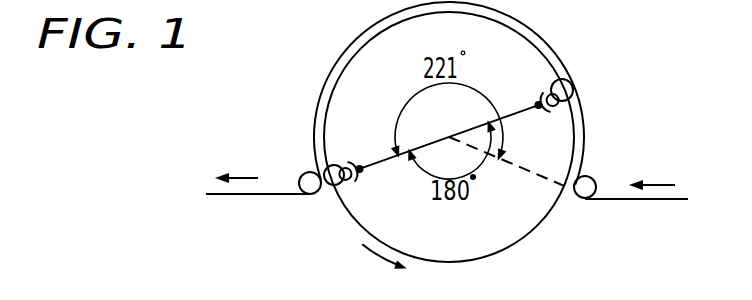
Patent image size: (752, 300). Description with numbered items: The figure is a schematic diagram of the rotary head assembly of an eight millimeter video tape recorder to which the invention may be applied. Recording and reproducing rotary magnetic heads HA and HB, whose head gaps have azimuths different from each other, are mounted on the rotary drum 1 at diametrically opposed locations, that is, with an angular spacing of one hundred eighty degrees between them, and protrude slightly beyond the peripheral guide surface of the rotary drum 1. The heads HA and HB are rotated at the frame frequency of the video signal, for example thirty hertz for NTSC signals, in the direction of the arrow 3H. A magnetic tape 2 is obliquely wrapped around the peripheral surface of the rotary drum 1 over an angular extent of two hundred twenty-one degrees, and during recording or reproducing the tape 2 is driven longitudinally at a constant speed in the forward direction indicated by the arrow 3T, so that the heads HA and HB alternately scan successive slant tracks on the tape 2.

The rotary drum 1 is at (540, 222).
The magnetic tape 2 is at (657, 203).
The arrow 3T is at (251, 175).
The arrow 3H is at (380, 264).
The rotary magnetic head HA is at (571, 79).
The rotary magnetic head HB is at (340, 195).